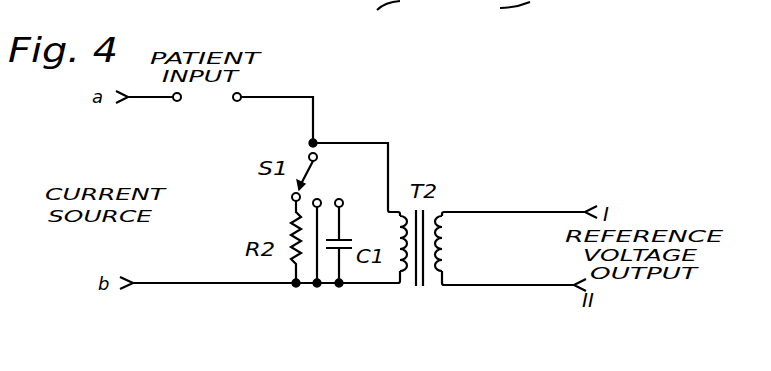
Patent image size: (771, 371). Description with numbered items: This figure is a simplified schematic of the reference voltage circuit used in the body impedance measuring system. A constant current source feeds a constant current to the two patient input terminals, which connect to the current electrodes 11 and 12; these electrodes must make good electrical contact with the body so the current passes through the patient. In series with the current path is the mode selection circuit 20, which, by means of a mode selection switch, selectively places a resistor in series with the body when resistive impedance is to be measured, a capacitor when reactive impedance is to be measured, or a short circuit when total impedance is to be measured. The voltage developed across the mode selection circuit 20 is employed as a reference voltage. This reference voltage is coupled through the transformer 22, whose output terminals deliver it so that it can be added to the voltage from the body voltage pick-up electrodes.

The current electrode 11 is at (174, 101).
The current electrode 12 is at (236, 101).
The mode selection circuit 20 is at (300, 302).
The transformer 22 is at (415, 308).